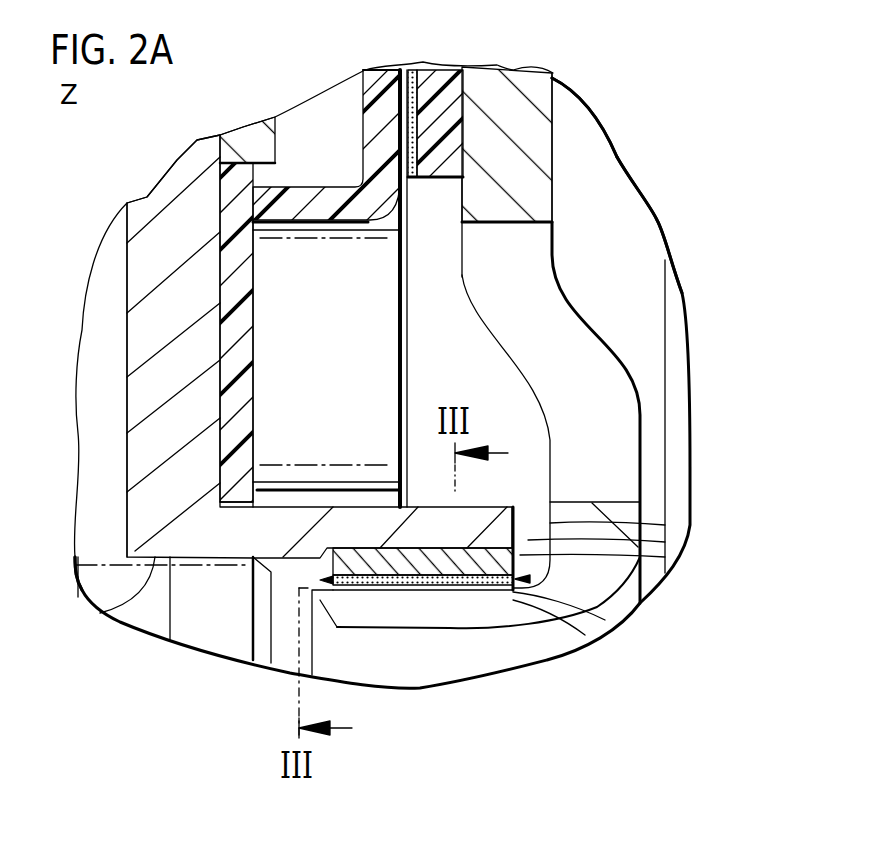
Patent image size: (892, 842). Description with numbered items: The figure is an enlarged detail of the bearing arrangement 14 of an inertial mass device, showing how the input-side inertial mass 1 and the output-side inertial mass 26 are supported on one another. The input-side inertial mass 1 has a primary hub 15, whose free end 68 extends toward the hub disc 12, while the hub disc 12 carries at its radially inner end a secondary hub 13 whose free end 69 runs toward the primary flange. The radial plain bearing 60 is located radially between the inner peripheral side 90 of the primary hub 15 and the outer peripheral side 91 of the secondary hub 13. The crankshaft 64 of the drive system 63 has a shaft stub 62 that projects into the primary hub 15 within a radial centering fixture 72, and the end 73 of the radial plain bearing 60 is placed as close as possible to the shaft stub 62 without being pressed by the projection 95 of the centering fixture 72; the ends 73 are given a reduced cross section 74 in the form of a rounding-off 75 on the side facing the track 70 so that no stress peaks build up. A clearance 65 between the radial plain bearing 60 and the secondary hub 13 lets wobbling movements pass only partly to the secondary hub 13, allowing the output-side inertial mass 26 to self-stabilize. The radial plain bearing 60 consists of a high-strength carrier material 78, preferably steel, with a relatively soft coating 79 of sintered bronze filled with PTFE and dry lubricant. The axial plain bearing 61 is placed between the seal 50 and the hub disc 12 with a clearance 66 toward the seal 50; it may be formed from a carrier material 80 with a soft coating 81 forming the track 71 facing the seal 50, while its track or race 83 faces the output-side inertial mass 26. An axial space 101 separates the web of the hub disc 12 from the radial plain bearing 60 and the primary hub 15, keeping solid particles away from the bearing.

The input-side inertial mass 1 is at (125, 265).
The hub disc 12 is at (538, 198).
The secondary hub 13 is at (463, 613).
The bearing arrangement 14 is at (427, 557).
The primary hub 15 is at (365, 525).
The output-side inertial mass 26 is at (558, 142).
The seal 50 is at (220, 220).
The radial plain bearing 60 is at (580, 643).
The axial plain bearing 61 is at (437, 82).
The shaft stub 62 is at (237, 635).
The drive system 63 is at (147, 622).
The crankshaft 64 is at (205, 637).
The clearance 65 is at (437, 587).
The clearance 66 is at (363, 103).
The free end 68 is at (677, 527).
The free end 69 is at (323, 603).
The track 70 is at (538, 640).
The track 71 is at (387, 67).
The radial centering fixture 72 is at (170, 640).
The end 73 is at (327, 567).
The reduced cross section 74 is at (308, 593).
The rounding-off 75 is at (337, 612).
The carrier material 78 is at (377, 567).
The coating 79 is at (400, 580).
The carrier material 80 is at (458, 97).
The coating 81 is at (408, 128).
The track or race 83 is at (467, 127).
The inner peripheral side 90 is at (515, 480).
The outer peripheral side 91 is at (575, 655).
The projection 95 is at (112, 616).
The axial space 101 is at (680, 550).